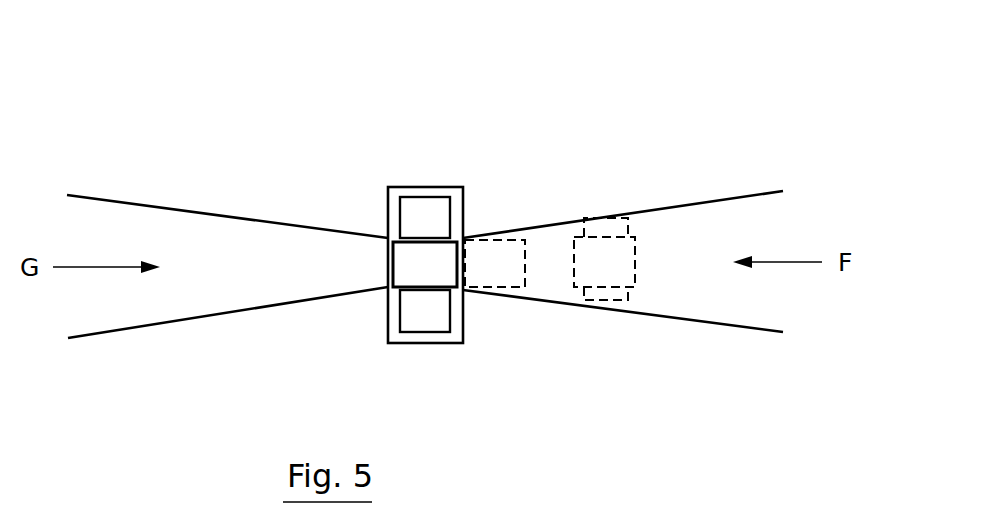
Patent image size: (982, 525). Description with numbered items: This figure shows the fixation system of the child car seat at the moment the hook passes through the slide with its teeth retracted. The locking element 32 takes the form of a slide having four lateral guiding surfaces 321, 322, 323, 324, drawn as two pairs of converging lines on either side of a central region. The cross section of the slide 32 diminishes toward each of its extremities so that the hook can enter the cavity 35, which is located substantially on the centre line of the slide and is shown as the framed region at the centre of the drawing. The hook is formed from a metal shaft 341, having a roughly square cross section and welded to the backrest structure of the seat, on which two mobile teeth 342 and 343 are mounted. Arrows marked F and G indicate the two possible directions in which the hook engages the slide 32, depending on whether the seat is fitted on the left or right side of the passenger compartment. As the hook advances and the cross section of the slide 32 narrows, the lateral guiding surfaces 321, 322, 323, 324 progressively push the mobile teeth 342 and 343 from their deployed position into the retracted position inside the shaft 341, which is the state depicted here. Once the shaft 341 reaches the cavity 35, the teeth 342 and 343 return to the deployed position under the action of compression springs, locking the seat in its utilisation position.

The locking element 32 is at (431, 258).
The lateral guiding surface 321 is at (686, 319).
The lateral guiding surface 322 is at (752, 199).
The lateral guiding surface 323 is at (168, 323).
The lateral guiding surface 324 is at (150, 208).
The cavity 35 is at (458, 198).
The metal shaft 341 is at (428, 267).
The mobile tooth 342 is at (418, 215).
The mobile tooth 343 is at (425, 317).